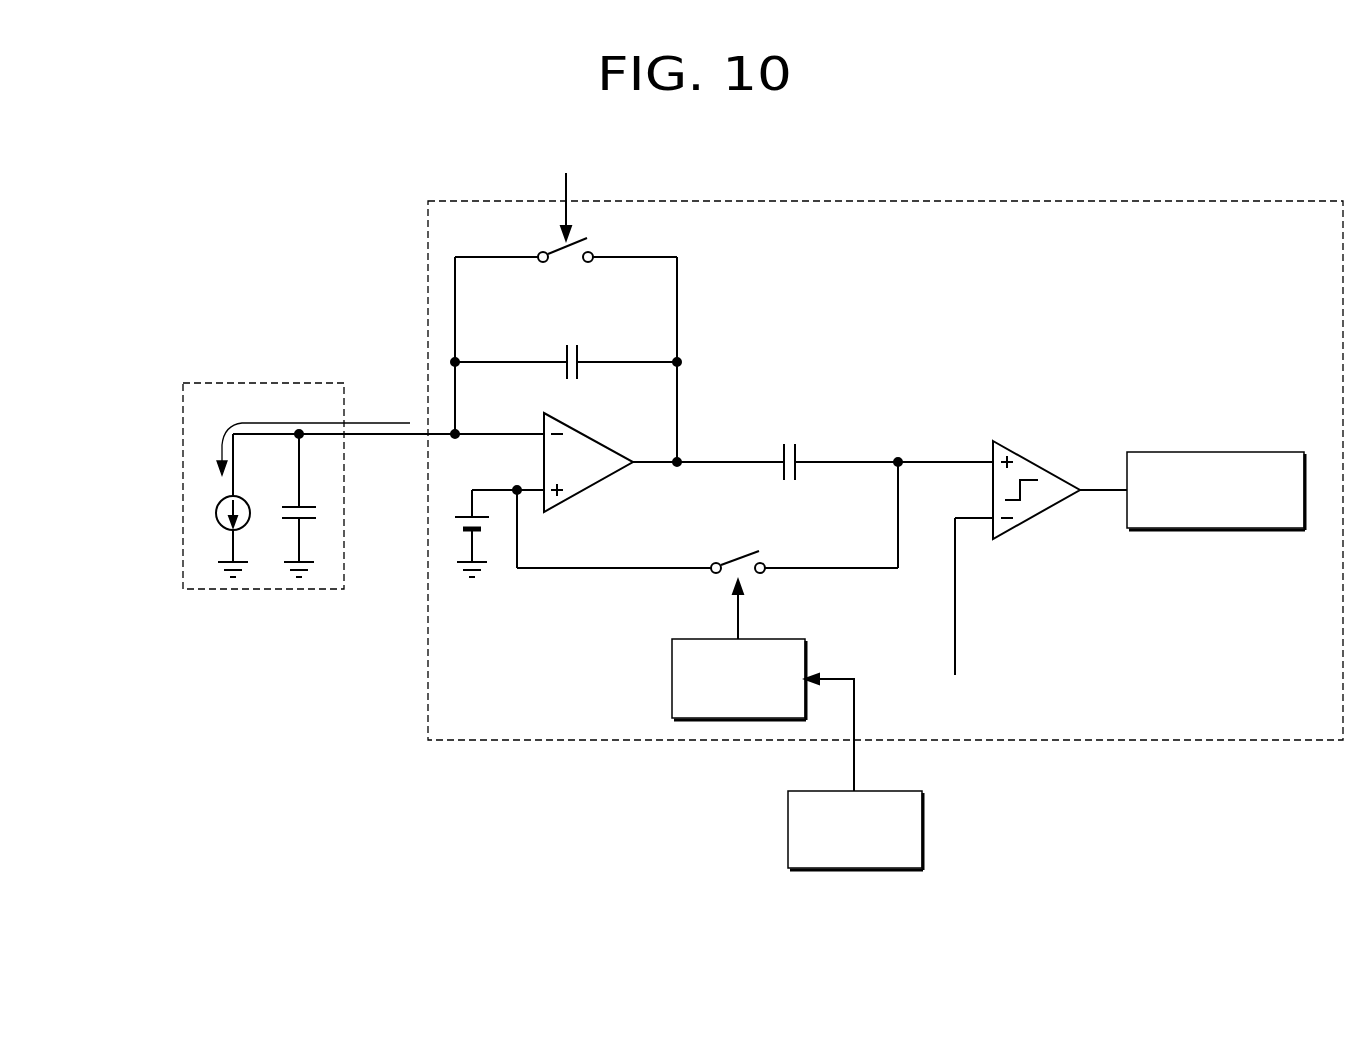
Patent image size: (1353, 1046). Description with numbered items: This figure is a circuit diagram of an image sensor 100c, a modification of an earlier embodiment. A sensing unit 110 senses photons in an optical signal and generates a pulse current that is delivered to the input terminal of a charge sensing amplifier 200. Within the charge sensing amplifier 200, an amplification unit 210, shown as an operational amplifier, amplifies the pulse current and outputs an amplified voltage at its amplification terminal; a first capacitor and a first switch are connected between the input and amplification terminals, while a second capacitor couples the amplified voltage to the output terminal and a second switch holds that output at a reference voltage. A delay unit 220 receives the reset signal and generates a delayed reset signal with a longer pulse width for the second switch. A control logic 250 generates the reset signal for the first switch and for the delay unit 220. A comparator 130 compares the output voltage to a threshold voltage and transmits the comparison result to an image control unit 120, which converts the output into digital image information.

The image sensor 100c is at (1221, 144).
The sensing unit 110 is at (250, 383).
The charge sensing amplifier 200 is at (823, 201).
The amplification unit 210 is at (590, 435).
The delay unit 220 is at (762, 639).
The control logic 250 is at (885, 791).
The comparator 130 is at (1038, 463).
The image control unit 120 is at (1240, 452).